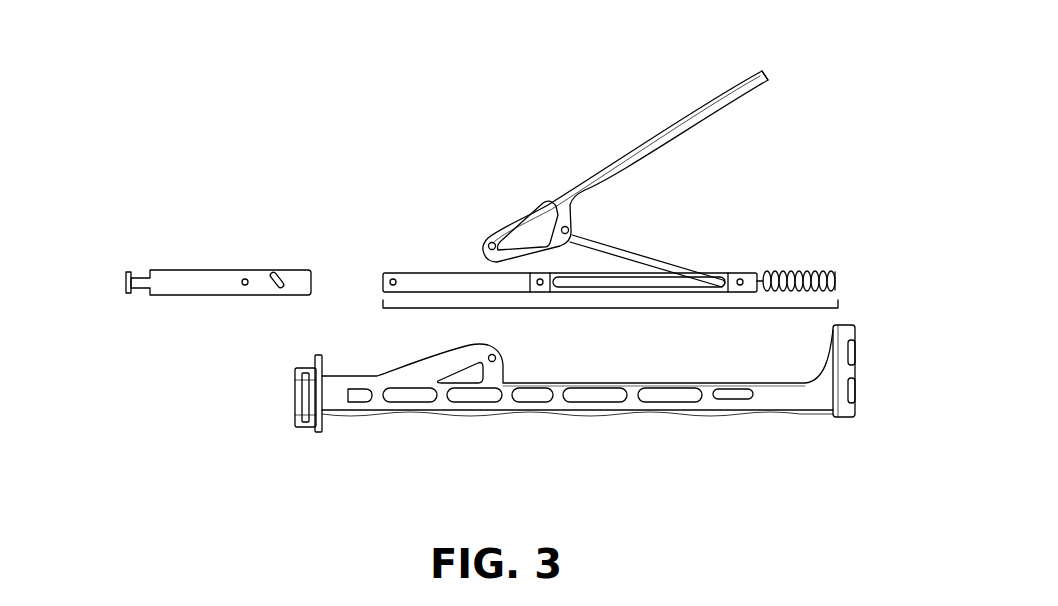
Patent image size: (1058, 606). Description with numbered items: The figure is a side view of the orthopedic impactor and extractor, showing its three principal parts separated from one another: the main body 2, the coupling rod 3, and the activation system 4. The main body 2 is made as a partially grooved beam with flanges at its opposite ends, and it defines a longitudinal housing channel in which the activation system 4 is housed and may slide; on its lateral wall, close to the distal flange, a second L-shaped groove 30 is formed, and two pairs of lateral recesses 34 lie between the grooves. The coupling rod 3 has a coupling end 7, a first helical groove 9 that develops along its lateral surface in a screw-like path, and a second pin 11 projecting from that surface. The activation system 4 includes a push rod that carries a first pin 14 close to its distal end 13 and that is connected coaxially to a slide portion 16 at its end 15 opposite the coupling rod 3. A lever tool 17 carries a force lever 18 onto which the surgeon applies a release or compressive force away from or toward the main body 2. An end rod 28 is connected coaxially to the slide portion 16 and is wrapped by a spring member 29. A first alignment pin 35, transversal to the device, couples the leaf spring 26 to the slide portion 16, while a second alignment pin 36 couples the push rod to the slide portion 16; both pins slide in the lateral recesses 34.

The main body 2 is at (856, 414).
The coupling rod 3 is at (188, 268).
The activation system 4 is at (610, 328).
The coupling end 7 is at (140, 277).
The first helical groove 9 is at (272, 272).
The second pin 11 is at (243, 284).
The distal end 13 is at (385, 288).
The first pin 14 is at (393, 279).
The end 15 is at (536, 281).
The slide portion 16 is at (672, 266).
The lever tool 17 is at (503, 212).
The force lever 18 is at (742, 77).
The leaf spring 26 is at (615, 280).
The end rod 28 is at (790, 273).
The spring member 29 is at (837, 277).
The second L-shaped groove 30 is at (350, 400).
The lateral recesses 34 is at (740, 395).
The first alignment pin 35 is at (740, 278).
The second alignment pin 36 is at (538, 279).